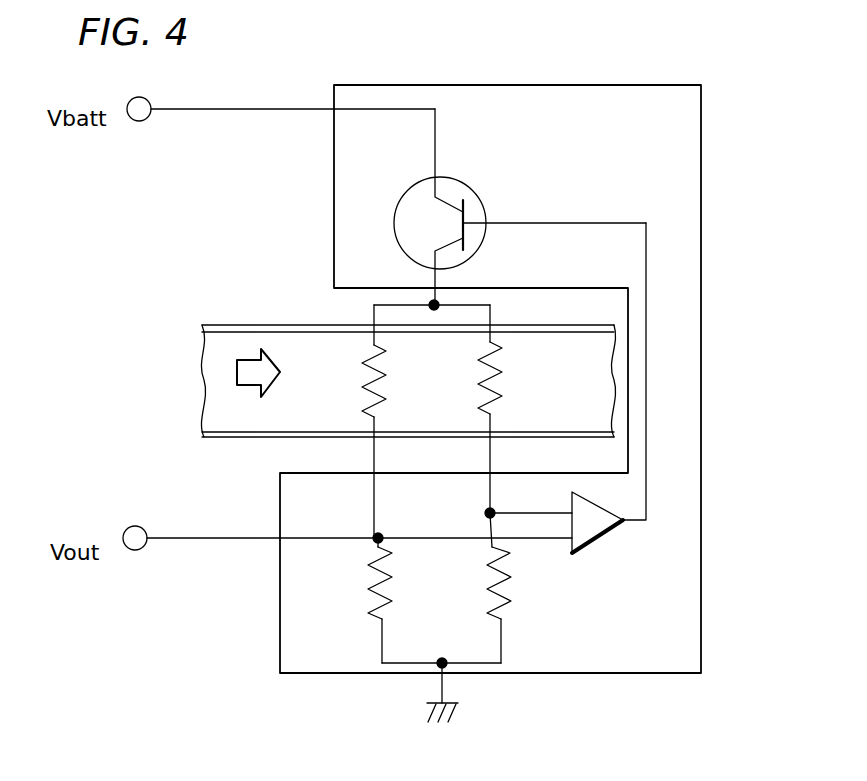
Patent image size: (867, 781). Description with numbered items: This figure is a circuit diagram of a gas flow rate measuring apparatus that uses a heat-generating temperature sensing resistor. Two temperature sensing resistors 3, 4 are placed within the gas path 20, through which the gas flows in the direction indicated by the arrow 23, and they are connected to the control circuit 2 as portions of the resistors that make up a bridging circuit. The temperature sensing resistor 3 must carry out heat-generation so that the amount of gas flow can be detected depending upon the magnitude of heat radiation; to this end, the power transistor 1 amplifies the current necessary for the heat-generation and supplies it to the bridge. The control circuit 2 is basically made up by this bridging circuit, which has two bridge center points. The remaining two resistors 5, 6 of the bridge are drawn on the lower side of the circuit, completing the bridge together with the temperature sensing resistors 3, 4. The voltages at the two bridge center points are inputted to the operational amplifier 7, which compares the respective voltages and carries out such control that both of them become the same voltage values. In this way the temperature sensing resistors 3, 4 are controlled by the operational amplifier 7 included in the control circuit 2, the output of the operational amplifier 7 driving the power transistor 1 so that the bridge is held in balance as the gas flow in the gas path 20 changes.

The power transistor 1 is at (484, 203).
The control circuit 2 is at (702, 543).
The temperature sensing resistor 3 is at (388, 383).
The temperature sensing resistor 4 is at (494, 363).
The resistor 5 is at (395, 606).
The resistor 6 is at (513, 586).
The operational amplifier 7 is at (612, 530).
The gas path 20 is at (242, 438).
The flow direction arrow 23 is at (237, 363).